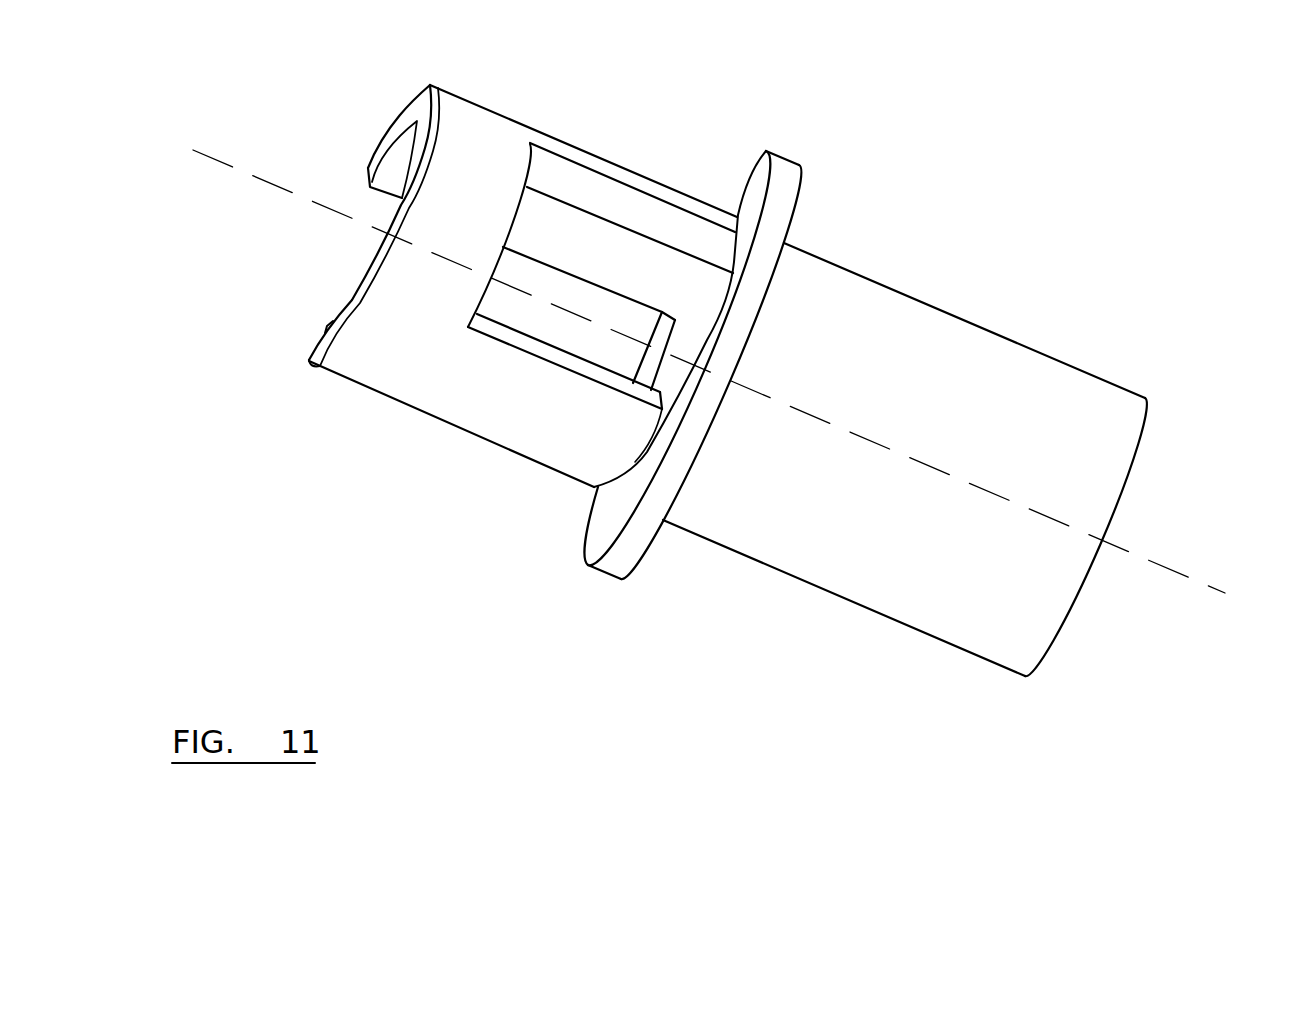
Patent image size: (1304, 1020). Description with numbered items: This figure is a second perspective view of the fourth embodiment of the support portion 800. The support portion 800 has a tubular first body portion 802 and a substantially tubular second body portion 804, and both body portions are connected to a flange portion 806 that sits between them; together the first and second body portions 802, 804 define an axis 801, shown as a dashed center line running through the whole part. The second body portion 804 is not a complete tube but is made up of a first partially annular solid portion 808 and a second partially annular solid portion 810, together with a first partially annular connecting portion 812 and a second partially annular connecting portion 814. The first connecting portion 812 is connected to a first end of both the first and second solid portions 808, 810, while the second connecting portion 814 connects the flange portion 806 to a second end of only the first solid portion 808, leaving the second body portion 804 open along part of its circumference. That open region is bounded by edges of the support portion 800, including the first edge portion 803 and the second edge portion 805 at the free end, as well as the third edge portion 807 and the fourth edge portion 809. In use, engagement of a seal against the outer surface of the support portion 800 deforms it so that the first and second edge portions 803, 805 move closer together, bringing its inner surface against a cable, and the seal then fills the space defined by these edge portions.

The support portion 800 is at (968, 247).
The axis 801 is at (737, 383).
The first body portion 802 is at (1048, 403).
The first edge portion 803 is at (356, 179).
The second body portion 804 is at (290, 372).
The second edge portion 805 is at (306, 336).
The flange portion 806 is at (638, 540).
The third edge portion 807 is at (677, 180).
The first partially annular solid portion 808 is at (593, 245).
The fourth edge portion 809 is at (508, 267).
The second partially annular solid portion 810 is at (470, 388).
The first partially annular connecting portion 812 is at (423, 290).
The second partially annular connecting portion 814 is at (677, 292).